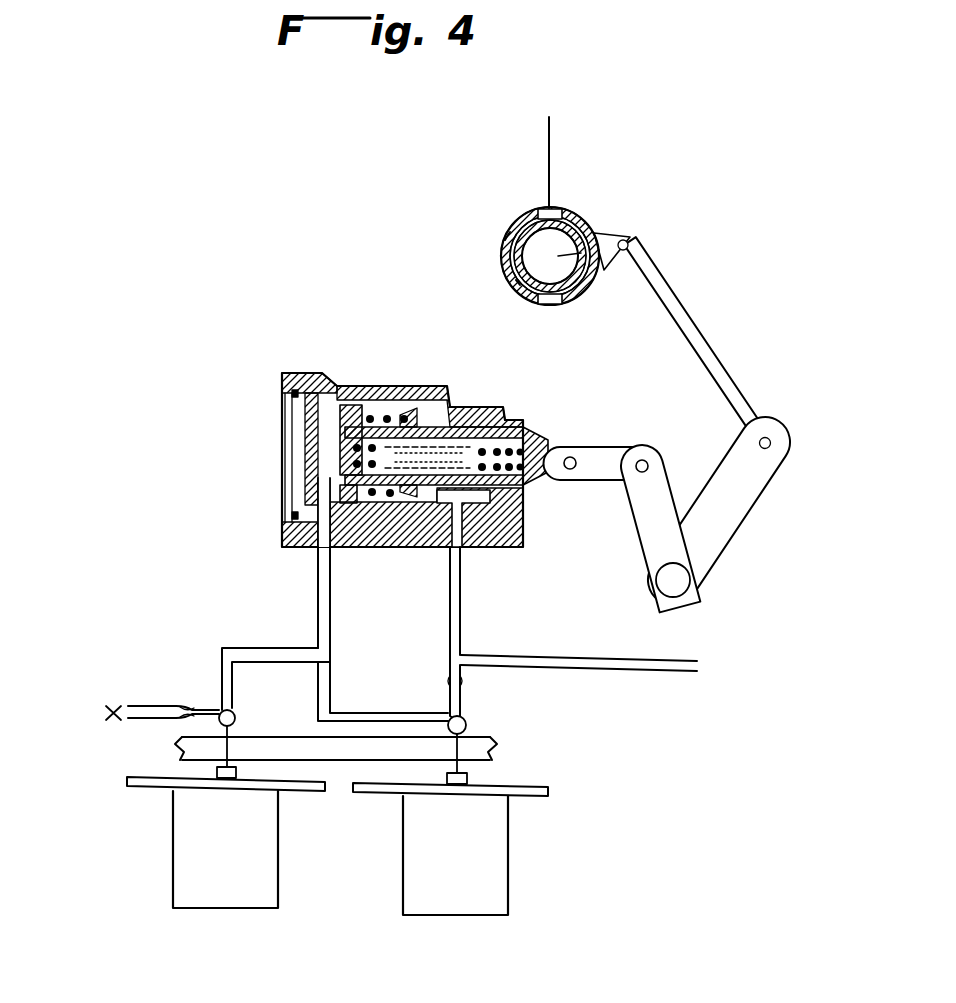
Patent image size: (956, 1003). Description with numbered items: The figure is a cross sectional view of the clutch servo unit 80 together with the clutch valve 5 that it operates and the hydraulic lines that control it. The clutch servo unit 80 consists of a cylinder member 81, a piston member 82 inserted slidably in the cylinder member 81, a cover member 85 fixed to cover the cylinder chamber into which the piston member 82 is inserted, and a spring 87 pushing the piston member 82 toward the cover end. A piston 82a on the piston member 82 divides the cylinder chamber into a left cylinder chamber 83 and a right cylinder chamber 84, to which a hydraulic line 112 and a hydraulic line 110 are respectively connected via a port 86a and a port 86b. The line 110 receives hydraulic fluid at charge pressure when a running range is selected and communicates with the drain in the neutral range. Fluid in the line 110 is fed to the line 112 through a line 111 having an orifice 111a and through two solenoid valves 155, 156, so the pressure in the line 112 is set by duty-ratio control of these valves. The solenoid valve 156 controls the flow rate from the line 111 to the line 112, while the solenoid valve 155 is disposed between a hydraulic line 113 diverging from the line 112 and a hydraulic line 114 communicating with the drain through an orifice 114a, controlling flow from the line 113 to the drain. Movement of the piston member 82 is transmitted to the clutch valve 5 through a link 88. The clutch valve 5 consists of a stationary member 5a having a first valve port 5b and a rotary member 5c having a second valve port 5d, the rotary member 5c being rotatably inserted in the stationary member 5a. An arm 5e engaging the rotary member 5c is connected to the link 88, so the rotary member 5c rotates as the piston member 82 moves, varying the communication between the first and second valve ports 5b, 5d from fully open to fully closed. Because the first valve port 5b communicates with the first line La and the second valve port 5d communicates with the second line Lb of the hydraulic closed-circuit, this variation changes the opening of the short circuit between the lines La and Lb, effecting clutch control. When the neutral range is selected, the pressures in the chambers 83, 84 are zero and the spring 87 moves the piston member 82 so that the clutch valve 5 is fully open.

The clutch valve 5 is at (606, 208).
The stationary member 5a is at (503, 261).
The first valve port 5b is at (547, 206).
The rotary member 5c is at (513, 293).
The second valve port 5d is at (553, 305).
The arm 5e is at (625, 233).
The first line La is at (597, 276).
The second line Lb is at (552, 147).
The clutch servo unit 80 is at (296, 350).
The cylinder member 81 is at (398, 386).
The piston member 82 is at (468, 414).
The piston 82a is at (339, 397).
The left cylinder chamber 83 is at (305, 432).
The right cylinder chamber 84 is at (432, 412).
The cover member 85 is at (300, 409).
The port 86a is at (318, 556).
The port 86b is at (463, 555).
The spring 87 is at (397, 505).
The link 88 is at (754, 379).
The hydraulic line 110 is at (550, 653).
The hydraulic line 111 is at (465, 707).
The orifice 111a is at (460, 682).
The hydraulic line 112 is at (333, 590).
The hydraulic line 113 is at (255, 647).
The hydraulic line 114 is at (137, 705).
The orifice 114a is at (187, 710).
The solenoid valve 155 is at (242, 893).
The solenoid valve 156 is at (474, 900).